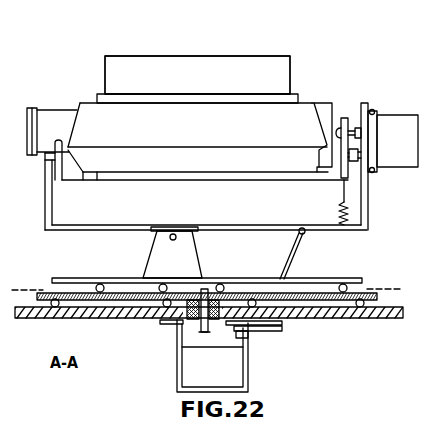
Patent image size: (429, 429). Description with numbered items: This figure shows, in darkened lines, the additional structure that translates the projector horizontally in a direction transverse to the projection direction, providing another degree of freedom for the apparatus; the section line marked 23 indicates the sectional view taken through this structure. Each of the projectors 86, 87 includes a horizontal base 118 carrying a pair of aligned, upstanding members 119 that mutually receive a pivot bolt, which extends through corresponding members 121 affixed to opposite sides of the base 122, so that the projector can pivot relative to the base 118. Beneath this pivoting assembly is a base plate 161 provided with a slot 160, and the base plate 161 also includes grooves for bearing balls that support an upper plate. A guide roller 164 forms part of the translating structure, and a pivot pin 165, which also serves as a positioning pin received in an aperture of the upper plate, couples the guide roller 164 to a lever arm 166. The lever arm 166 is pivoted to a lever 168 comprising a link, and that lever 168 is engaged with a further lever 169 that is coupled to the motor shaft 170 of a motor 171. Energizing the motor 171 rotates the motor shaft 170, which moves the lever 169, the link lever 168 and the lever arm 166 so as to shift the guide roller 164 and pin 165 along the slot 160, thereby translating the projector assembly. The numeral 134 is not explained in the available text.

The projector 86 is at (219, 68).
The projector 87 is at (197, 75).
The optical housing 134 is at (175, 181).
The base 122 is at (105, 223).
The member 121 is at (196, 234).
The upstanding member 119 is at (197, 271).
The horizontal base 118 is at (243, 281).
The lever arm 166 is at (275, 301).
The lever 168 is at (288, 308).
The base plate 161 is at (371, 320).
The slot 160 is at (175, 327).
The guide roller 164 is at (187, 320).
The pivot pin 165 is at (198, 330).
The motor 171 is at (190, 371).
The motor shaft 170 is at (246, 347).
The lever 169 is at (245, 335).
The section line 23- 23 is at (22, 284).